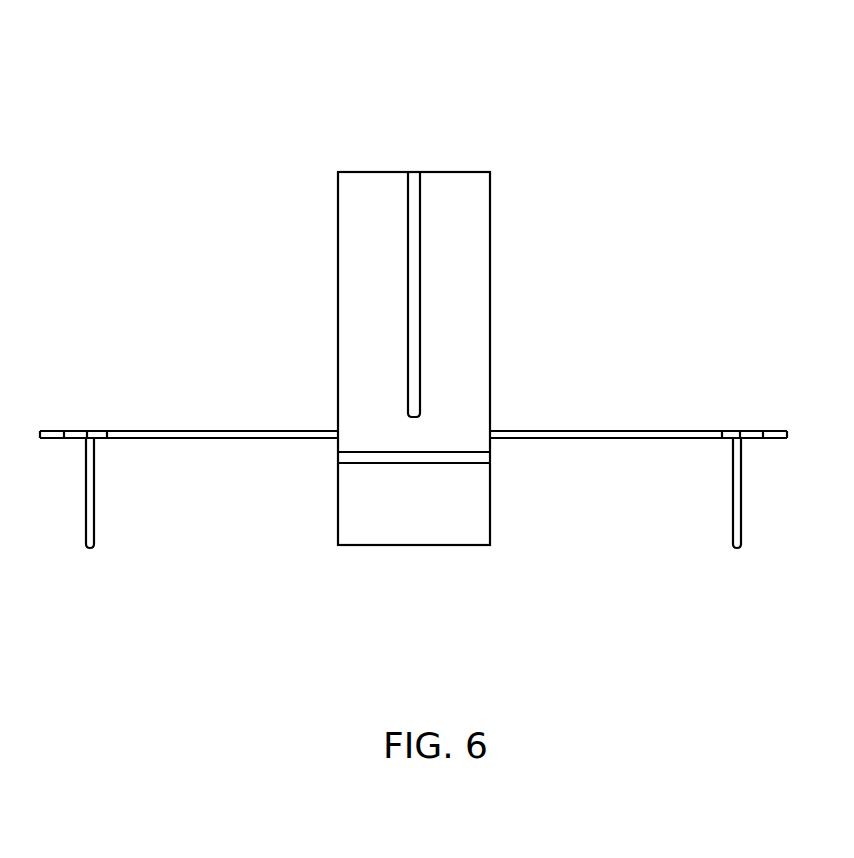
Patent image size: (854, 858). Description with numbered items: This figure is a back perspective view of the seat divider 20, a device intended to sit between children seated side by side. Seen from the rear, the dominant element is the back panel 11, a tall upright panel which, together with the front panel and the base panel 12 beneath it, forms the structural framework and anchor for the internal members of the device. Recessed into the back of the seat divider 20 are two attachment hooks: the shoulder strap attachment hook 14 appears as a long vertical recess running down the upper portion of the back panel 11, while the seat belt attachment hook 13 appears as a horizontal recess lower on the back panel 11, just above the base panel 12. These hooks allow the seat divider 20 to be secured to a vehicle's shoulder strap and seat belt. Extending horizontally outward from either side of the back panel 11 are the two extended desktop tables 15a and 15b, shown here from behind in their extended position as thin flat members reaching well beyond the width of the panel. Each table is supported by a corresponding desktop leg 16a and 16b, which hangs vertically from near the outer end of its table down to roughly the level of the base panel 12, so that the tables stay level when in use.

The seat divider 20 is at (256, 187).
The back panel 11 is at (481, 232).
The base panel 12 is at (426, 525).
The seat belt attachment hook 13 is at (332, 481).
The shoulder strap attachment hook 14 is at (404, 268).
The extended desktop table 15a is at (212, 411).
The extended desktop table 15b is at (675, 411).
The desktop leg 16a is at (116, 545).
The desktop leg 16b is at (707, 545).